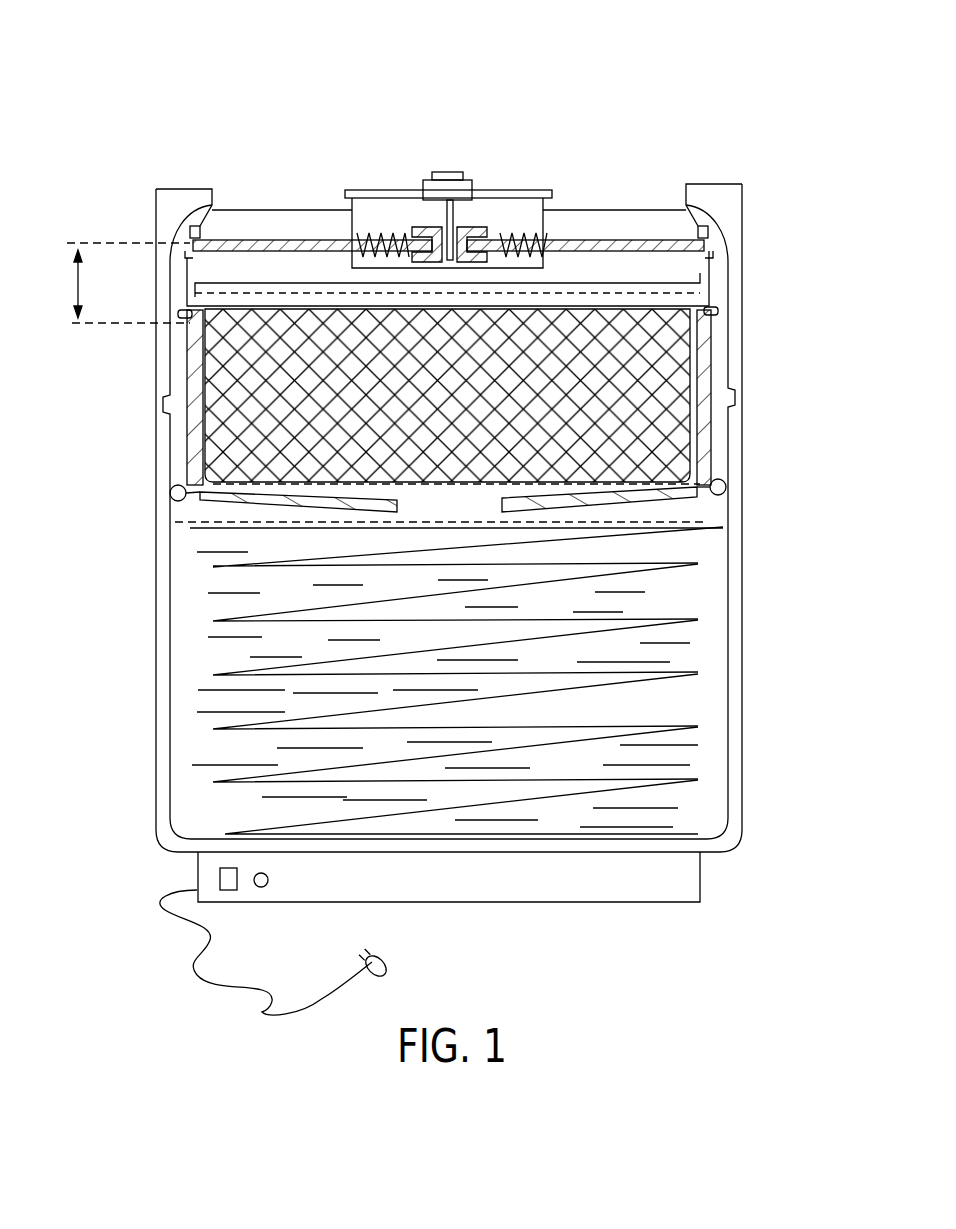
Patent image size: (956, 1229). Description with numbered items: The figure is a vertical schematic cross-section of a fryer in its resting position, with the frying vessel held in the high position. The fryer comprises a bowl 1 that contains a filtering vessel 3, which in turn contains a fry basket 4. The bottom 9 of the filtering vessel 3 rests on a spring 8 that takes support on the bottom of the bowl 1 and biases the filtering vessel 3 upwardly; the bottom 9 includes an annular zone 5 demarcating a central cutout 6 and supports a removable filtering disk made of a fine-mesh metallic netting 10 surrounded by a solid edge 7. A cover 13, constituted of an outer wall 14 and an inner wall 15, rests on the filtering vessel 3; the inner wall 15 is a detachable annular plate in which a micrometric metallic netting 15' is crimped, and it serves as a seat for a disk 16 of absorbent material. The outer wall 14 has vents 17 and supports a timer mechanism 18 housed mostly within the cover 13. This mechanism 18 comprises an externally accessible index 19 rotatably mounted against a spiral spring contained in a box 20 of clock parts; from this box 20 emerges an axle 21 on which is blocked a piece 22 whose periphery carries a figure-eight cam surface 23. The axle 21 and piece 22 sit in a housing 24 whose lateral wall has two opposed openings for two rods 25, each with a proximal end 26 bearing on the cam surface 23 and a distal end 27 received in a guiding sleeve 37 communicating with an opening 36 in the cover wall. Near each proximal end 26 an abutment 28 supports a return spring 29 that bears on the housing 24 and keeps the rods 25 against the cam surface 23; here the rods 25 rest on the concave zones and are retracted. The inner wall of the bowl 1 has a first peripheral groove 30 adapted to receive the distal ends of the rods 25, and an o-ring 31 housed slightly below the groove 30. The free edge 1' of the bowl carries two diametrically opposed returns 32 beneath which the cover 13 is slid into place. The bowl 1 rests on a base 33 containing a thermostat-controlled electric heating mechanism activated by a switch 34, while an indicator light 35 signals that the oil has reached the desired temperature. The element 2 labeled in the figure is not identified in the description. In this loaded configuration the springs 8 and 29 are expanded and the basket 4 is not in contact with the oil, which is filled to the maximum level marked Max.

The bowl 1 is at (810, 681).
The free edge of the bowl 1' is at (184, 337).
The container 2 is at (729, 586).
The filtering vessel 3 is at (710, 397).
The fry basket 4 is at (692, 343).
The annular zone 5 is at (700, 505).
The central cutout 6 is at (425, 500).
The solid edge 7 is at (727, 481).
The spring 8 is at (690, 727).
The bottom of the filtering vessel 9 is at (230, 508).
The fine-mesh metallic netting 10 is at (453, 498).
The cover 13 is at (650, 82).
The outer wall 14 is at (273, 210).
The inner wall 15 is at (481, 319).
The micrometric metallic netting 15' is at (372, 234).
The disk 16 is at (690, 271).
The vents 17 is at (242, 210).
The timer mechanism 18 is at (543, 197).
The index 19 is at (433, 172).
The box 20 is at (423, 180).
The axle 21 is at (480, 227).
The piece 22 is at (398, 240).
The cam surface 23 is at (417, 227).
The housing 24 is at (548, 222).
The rods 25 is at (225, 240).
The proximal end 26 is at (512, 240).
The distal end 27 is at (705, 248).
The abutment 28 is at (362, 191).
The return spring 29 is at (530, 258).
The first peripheral groove 30 is at (162, 408).
The o-ring 31 is at (170, 495).
The returns 32 is at (172, 190).
The base 33 is at (687, 868).
The switch 34 is at (228, 890).
The indicator light 35 is at (263, 888).
The opening 36 is at (191, 233).
The guiding sleeve 37 is at (192, 225).